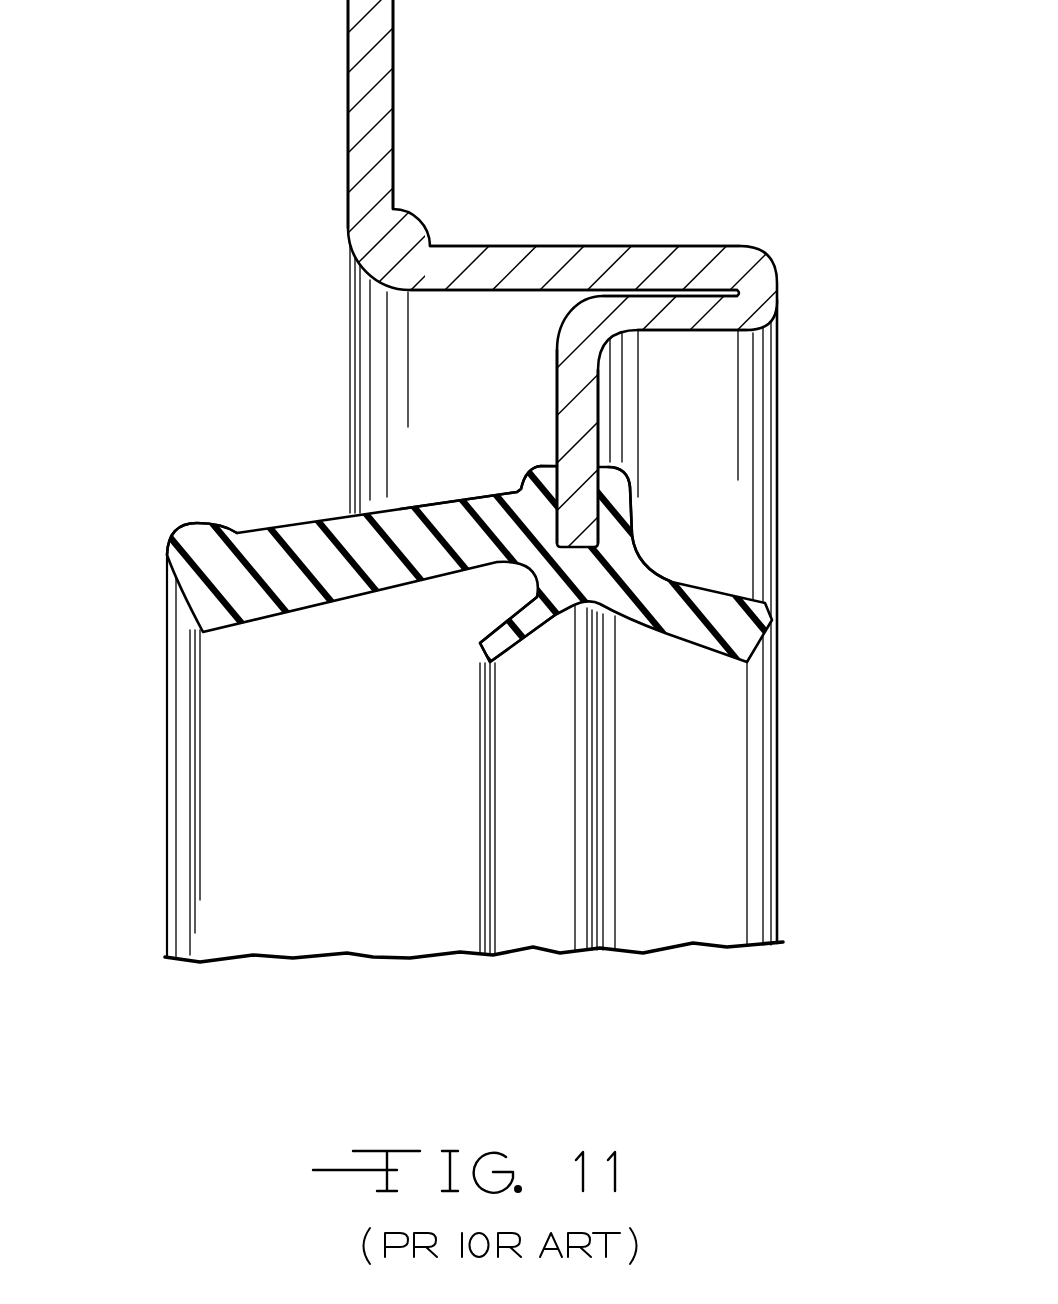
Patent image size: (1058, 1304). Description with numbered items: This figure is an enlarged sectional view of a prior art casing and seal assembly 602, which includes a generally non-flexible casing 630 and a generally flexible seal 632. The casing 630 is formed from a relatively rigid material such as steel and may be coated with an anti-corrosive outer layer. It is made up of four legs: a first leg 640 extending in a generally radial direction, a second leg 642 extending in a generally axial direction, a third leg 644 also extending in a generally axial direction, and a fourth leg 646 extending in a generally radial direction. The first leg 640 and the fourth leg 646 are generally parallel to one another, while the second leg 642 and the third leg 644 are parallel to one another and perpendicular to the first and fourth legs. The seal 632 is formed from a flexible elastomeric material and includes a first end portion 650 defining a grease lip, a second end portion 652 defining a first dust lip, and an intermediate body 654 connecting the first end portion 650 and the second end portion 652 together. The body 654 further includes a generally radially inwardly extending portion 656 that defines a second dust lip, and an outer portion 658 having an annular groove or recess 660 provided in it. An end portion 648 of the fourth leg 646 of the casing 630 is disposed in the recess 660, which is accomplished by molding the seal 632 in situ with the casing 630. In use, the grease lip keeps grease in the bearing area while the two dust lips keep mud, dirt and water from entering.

The casing and seal assembly 602 is at (529, 365).
The casing 630 is at (529, 300).
The seal 632 is at (427, 509).
The first leg 640 is at (380, 67).
The second leg 642 is at (508, 258).
The third leg 644 is at (703, 320).
The fourth leg 646 is at (585, 432).
The end portion of the fourth leg 648 is at (595, 522).
The first end portion 650 is at (755, 643).
The second end portion 652 is at (185, 590).
The intermediate body 654 is at (463, 490).
The radially inwardly extending portion 656 is at (510, 660).
The outer portion 658 is at (618, 502).
The annular groove or recess 660 is at (563, 486).